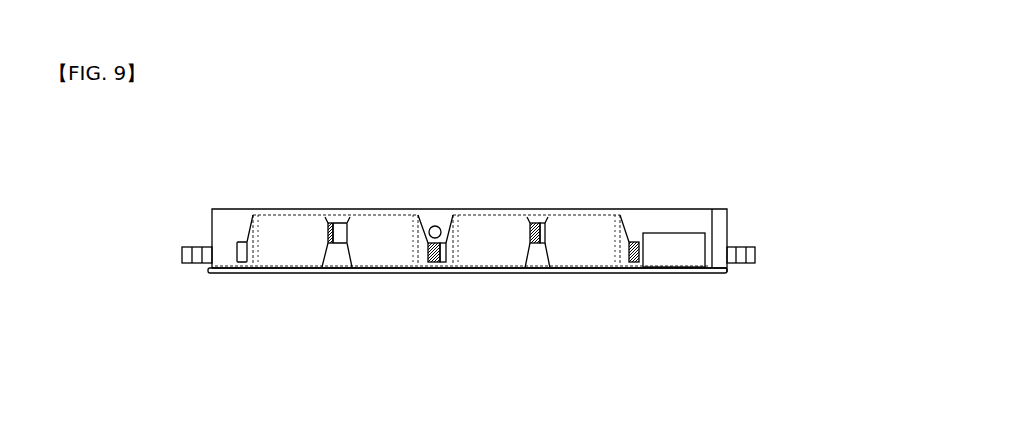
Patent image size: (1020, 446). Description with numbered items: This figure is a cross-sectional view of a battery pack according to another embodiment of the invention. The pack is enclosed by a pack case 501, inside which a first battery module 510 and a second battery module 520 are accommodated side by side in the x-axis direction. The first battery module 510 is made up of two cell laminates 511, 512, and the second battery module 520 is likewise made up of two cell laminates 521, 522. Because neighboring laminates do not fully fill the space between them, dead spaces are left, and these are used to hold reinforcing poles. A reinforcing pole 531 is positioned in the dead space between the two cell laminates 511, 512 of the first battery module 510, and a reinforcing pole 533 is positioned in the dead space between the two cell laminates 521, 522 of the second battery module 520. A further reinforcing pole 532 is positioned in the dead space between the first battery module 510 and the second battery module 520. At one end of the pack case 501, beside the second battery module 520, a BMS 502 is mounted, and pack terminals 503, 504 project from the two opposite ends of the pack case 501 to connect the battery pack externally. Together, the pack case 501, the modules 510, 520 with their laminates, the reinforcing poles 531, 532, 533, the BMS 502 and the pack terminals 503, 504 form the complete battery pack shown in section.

The pack case 501 is at (497, 208).
The BMS 502 is at (683, 233).
The pack terminal 503 is at (182, 264).
The pack terminal 504 is at (757, 264).
The first battery module 510 is at (285, 250).
The cell laminate 511 is at (297, 258).
The cell laminate 512 is at (396, 258).
The second battery module 520 is at (568, 244).
The cell laminate 521 is at (497, 252).
The cell laminate 522 is at (568, 258).
The reinforcing pole 531 is at (338, 258).
The reinforcing pole 532 is at (430, 226).
The reinforcing pole 533 is at (540, 262).